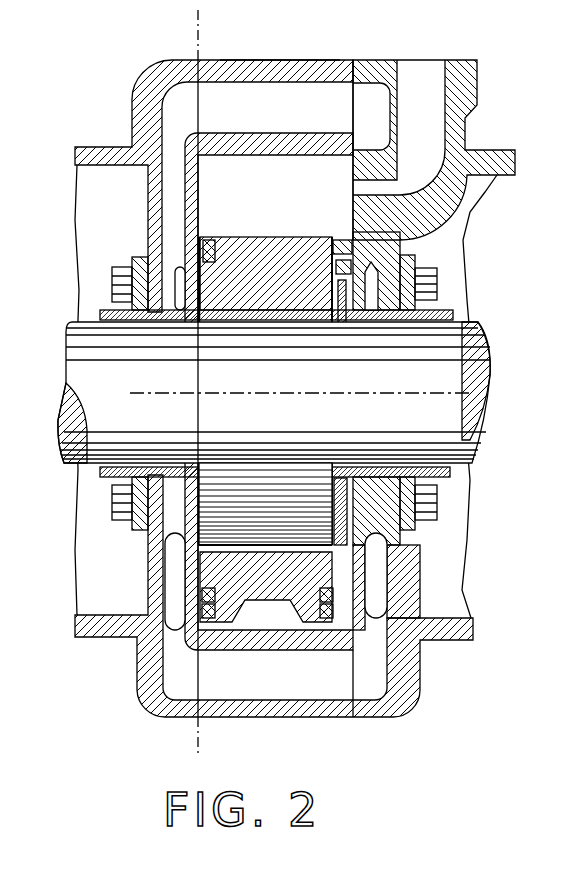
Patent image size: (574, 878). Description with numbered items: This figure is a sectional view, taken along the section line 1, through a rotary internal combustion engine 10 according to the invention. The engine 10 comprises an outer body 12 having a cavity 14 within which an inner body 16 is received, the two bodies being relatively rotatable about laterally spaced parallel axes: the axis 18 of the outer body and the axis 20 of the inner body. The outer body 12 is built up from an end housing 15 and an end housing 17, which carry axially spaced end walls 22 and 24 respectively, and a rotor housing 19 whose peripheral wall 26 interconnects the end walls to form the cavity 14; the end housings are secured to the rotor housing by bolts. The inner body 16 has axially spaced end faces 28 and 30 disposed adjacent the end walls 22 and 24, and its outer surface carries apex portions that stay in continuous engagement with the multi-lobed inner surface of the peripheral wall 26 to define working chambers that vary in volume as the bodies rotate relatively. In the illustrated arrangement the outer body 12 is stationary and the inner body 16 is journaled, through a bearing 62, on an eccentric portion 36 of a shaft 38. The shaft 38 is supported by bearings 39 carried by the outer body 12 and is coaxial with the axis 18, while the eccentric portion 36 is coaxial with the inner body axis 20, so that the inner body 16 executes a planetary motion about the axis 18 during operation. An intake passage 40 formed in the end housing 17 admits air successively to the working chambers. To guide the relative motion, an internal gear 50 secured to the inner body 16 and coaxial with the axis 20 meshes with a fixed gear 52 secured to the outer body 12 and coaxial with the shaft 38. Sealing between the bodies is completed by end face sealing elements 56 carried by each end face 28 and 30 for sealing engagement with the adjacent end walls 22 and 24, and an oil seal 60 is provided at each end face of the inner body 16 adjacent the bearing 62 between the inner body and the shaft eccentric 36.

The section line 1- 1 is at (196, 23).
The rotary internal combustion engine 10 is at (241, 56).
The outer body 12 is at (140, 74).
The cavity 14 is at (275, 196).
The end housing 15 is at (148, 206).
The inner body 16 is at (265, 391).
The end housing 17 is at (400, 611).
The axis of outer body 18 is at (62, 395).
The rotor housing 19 is at (316, 60).
The axis of inner body 20 is at (306, 397).
The end wall 22 is at (185, 145).
The end wall 24 is at (380, 255).
The peripheral wall 26 is at (240, 158).
The end face 28 is at (209, 264).
The end face 30 is at (340, 282).
The eccentric portion 36 is at (265, 497).
The shaft 38 is at (76, 356).
The bearings 39 is at (100, 315).
The intake passage 40 is at (425, 60).
The internal gear 50 is at (347, 560).
The fixed gear 52 is at (342, 325).
The end face sealing elements 56 is at (205, 610).
The oil seal 60 is at (205, 592).
The bearing 62 is at (255, 565).